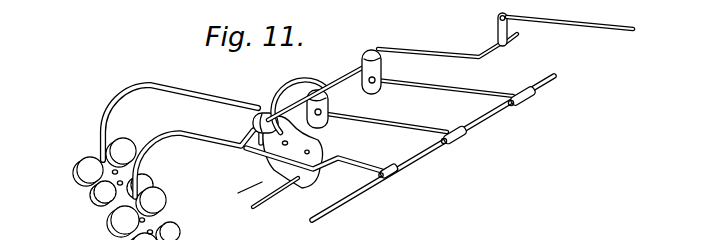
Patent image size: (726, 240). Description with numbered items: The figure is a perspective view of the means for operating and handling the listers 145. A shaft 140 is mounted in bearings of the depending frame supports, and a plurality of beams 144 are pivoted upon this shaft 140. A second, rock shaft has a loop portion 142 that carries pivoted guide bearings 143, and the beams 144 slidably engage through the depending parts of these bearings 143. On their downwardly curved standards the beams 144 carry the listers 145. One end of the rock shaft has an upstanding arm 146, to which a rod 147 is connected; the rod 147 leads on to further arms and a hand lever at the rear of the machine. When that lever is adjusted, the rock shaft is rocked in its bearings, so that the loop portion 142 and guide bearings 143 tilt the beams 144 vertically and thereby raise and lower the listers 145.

The shaft 140 is at (555, 82).
The loop portion 142 is at (428, 50).
The pivoted guide bearings 143 is at (362, 62).
The beams 144 is at (365, 157).
The listers 145 is at (153, 182).
The upstanding arm 146 is at (509, 42).
The rod 147 is at (602, 24).